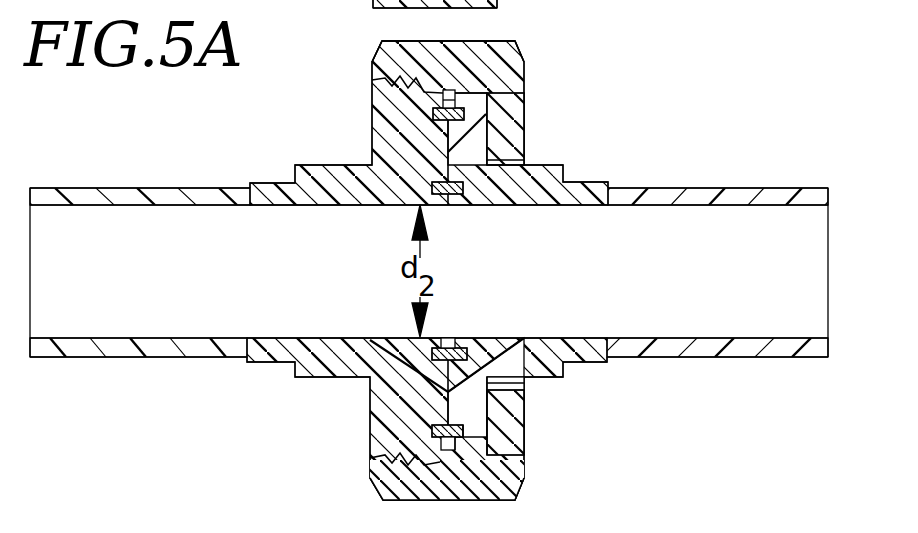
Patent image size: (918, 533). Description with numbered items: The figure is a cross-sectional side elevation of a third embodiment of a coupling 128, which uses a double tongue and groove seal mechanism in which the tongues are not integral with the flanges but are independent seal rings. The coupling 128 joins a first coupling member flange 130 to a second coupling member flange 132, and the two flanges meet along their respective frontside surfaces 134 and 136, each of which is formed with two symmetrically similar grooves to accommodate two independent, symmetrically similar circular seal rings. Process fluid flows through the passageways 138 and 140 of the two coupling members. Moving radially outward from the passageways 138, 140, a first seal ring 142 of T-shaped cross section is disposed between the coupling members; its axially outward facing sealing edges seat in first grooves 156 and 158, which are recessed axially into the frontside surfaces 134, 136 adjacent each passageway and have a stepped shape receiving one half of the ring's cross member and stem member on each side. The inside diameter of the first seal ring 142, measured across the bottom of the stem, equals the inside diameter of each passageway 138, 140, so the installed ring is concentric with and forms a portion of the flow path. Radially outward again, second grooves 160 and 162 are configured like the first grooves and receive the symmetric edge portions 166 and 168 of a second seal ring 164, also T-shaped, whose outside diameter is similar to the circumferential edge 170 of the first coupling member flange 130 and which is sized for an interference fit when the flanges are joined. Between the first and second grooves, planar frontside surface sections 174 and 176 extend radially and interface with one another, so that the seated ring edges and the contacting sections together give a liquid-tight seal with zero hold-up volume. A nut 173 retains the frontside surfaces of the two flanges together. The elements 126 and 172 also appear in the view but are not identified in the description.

The upper pipe section 126 is at (397, 8).
The coupling 128 is at (340, 102).
The first coupling member flange 130 is at (470, 390).
The second coupling member flange 132 is at (318, 170).
The frontside surface 134 is at (420, 176).
The frontside surface 136 is at (475, 369).
The process fluid flow passageway 138 is at (648, 205).
The process fluid flow passageway 140 is at (176, 206).
The first seal ring 142 is at (471, 211).
The first groove 156 is at (448, 357).
The first groove 158 is at (460, 193).
The second groove 160 is at (437, 428).
The second groove 162 is at (487, 100).
The second seal ring 164 is at (480, 444).
The edge portion 166 is at (400, 437).
The edge portion 168 is at (500, 433).
The circumferential edge 170 is at (462, 96).
The cap 172 is at (432, 500).
The nut 173 is at (457, 58).
The frontside surface section 174 is at (405, 128).
The frontside surface section 176 is at (487, 143).